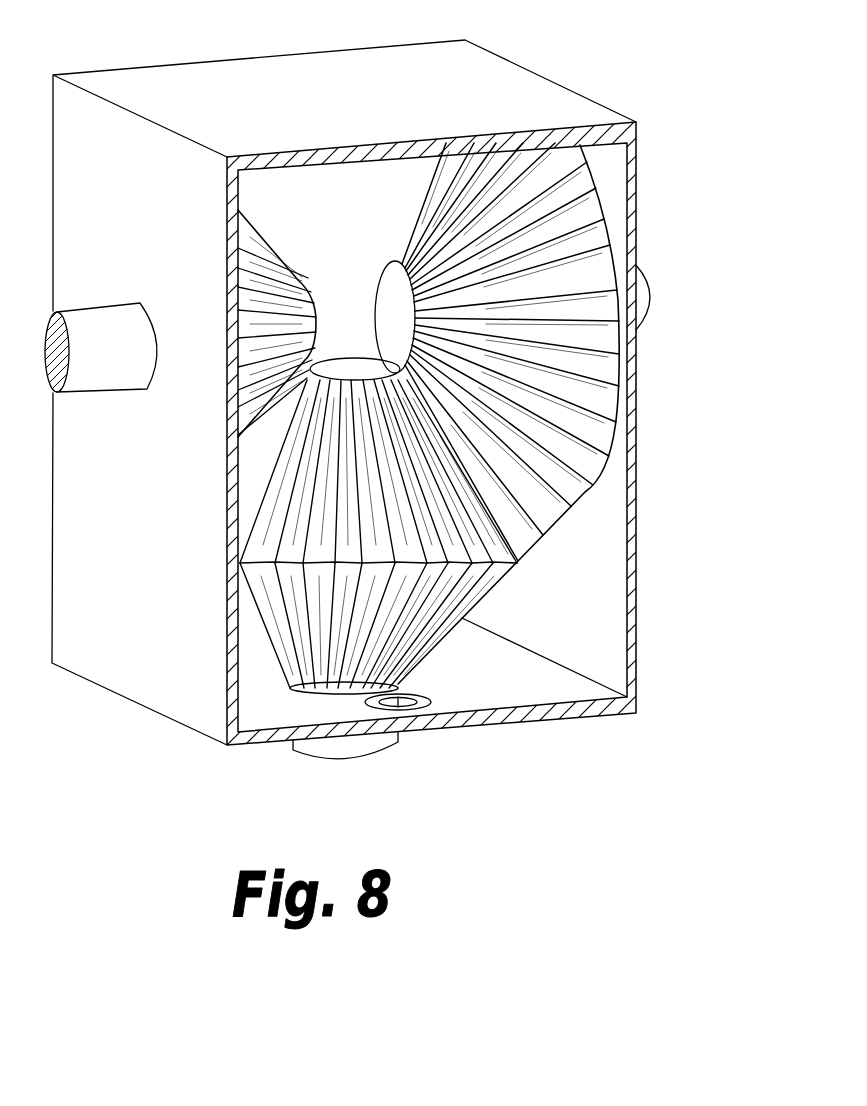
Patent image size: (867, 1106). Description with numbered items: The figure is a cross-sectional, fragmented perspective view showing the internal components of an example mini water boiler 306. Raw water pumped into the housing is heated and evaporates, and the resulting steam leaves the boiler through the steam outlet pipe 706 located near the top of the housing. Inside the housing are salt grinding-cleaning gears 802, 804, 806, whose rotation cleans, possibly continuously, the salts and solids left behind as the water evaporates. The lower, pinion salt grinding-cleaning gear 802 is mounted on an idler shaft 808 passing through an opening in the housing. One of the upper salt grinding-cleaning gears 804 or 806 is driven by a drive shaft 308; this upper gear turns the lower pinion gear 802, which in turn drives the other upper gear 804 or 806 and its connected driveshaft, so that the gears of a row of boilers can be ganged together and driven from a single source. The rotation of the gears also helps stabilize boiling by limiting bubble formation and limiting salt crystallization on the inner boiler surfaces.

The mini water boiler 306 is at (567, 43).
The steam outlet pipe 706 is at (566, 105).
The drive shaft 308 is at (108, 375).
The lower pinion salt grinding-cleaning gear 802 is at (540, 540).
The upper salt grinding-cleaning gear 804 is at (260, 250).
The upper salt grinding-cleaning gear 806 is at (465, 205).
The idler shaft 808 is at (347, 747).